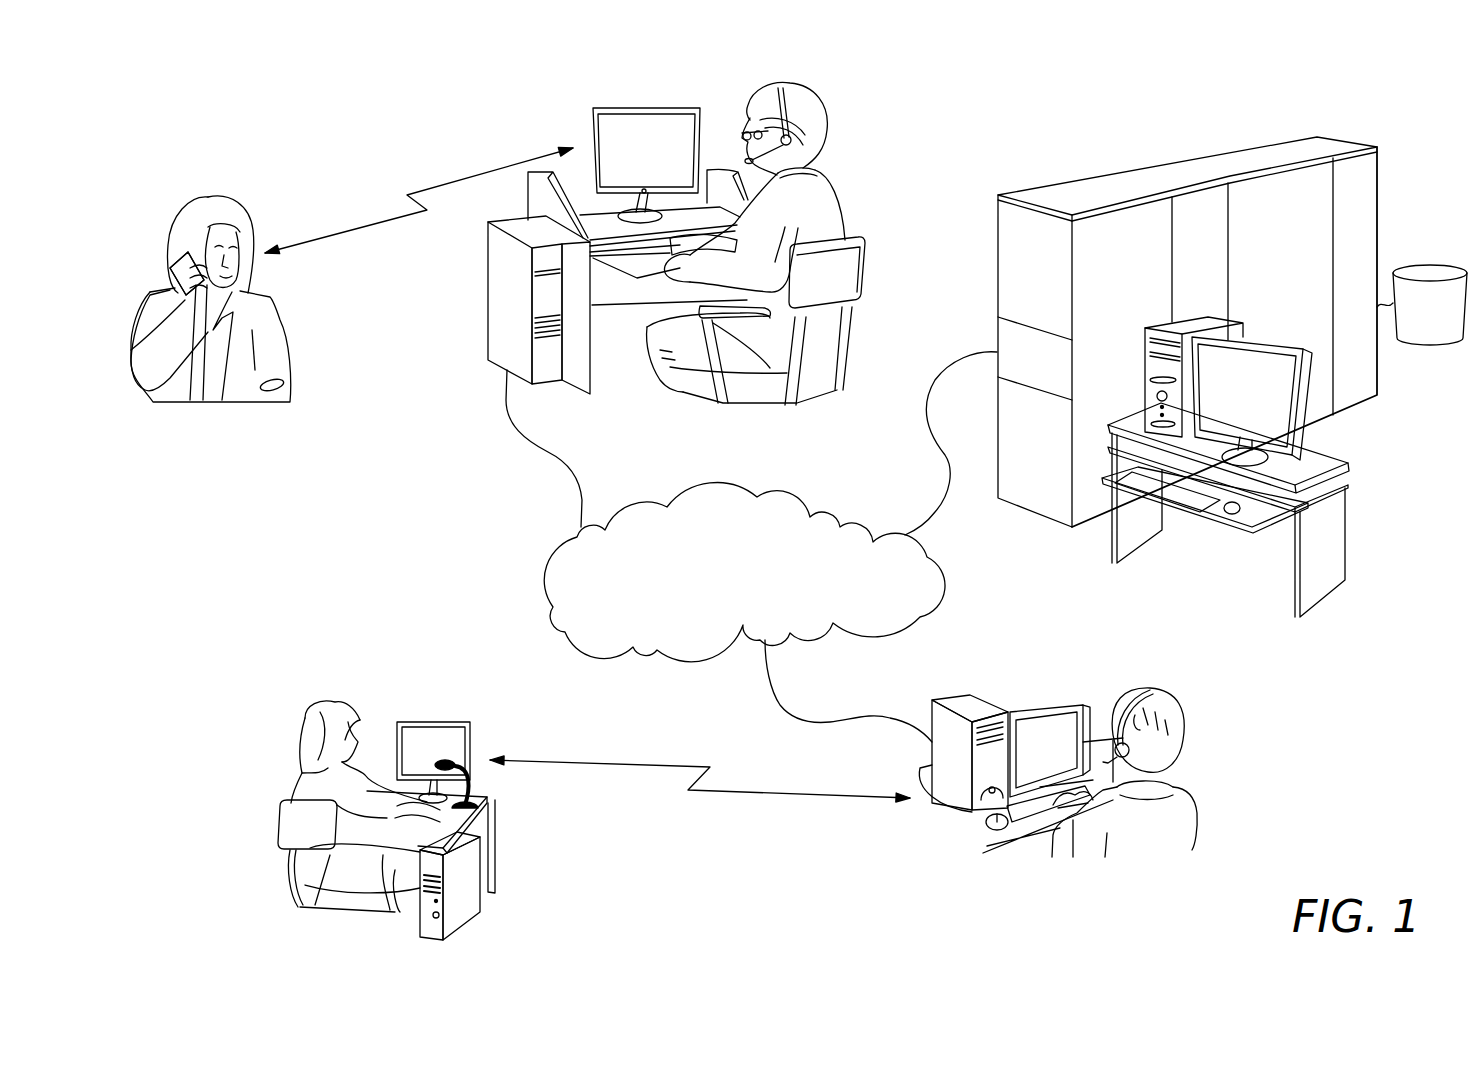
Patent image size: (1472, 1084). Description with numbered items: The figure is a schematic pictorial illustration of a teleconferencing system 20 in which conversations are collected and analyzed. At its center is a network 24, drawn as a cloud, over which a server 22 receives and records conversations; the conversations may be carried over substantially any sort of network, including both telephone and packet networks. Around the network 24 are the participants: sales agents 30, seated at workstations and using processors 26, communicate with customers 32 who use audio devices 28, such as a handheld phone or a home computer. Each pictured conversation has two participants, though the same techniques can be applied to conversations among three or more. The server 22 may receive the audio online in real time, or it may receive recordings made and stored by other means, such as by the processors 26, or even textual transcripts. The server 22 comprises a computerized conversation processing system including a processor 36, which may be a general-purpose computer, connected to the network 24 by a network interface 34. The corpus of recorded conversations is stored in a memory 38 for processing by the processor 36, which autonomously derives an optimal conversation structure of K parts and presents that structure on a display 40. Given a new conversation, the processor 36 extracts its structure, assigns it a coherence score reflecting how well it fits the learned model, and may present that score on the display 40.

The teleconferencing system 20 is at (1352, 101).
The server 22 is at (990, 603).
The network 24 is at (545, 578).
The processors 26 is at (488, 290).
The audio devices 28 is at (176, 268).
The sales agents 30 is at (815, 98).
The customers 32 is at (208, 197).
The network interface 34 is at (1033, 320).
The processor 36 is at (1168, 186).
The memory 38 is at (1428, 263).
The display 40 is at (1243, 340).